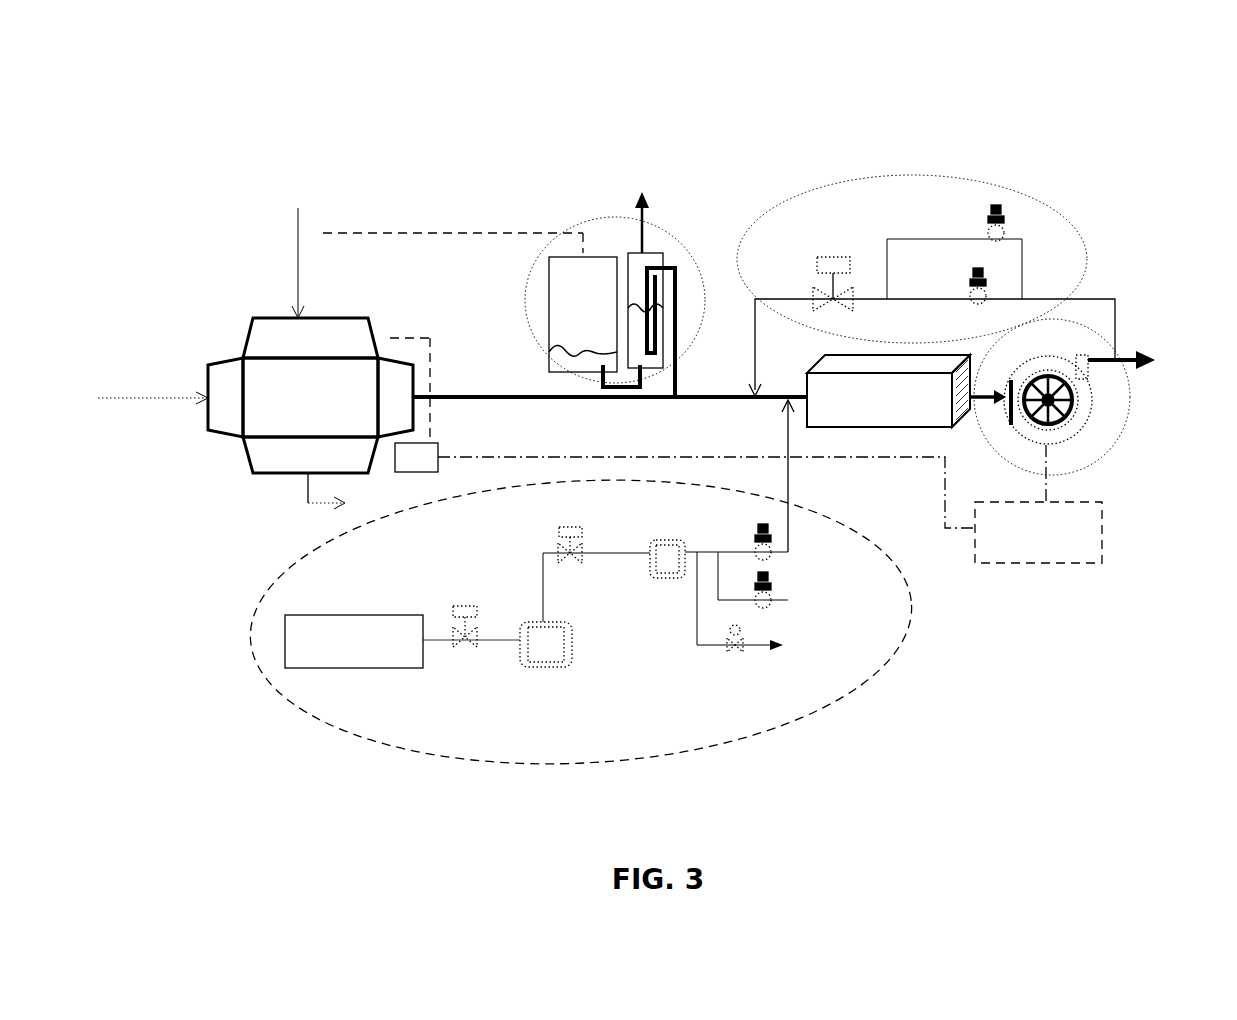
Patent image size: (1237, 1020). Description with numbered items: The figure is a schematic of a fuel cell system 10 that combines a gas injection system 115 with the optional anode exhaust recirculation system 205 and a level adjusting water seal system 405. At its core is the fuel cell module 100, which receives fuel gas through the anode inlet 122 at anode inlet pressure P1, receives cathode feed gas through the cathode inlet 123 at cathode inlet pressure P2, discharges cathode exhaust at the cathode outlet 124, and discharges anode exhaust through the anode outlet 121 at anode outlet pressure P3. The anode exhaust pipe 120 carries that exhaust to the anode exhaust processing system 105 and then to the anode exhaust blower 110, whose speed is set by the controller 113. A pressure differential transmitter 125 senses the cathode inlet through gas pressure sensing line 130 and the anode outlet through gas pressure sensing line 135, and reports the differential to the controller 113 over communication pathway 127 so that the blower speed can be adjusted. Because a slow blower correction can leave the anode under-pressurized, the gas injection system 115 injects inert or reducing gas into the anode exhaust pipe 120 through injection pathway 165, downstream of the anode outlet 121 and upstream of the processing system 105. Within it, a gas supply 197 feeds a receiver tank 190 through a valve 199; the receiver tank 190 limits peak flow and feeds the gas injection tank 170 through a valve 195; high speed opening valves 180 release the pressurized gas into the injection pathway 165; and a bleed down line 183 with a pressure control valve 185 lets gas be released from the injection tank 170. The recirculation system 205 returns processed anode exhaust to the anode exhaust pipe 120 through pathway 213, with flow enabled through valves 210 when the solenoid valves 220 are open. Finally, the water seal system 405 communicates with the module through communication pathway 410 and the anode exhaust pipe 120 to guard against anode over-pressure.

The fuel cell system 10 is at (1192, 135).
The fuel cell module 100 is at (183, 272).
The anode exhaust processing system 105 is at (890, 430).
The anode exhaust blower 110 is at (1063, 353).
The controller 113 is at (1102, 545).
The gas injection system 115 is at (395, 757).
The anode exhaust pipe 120 is at (724, 393).
The anode outlet 121 is at (377, 356).
The anode inlet 122 is at (203, 407).
The cathode inlet 123 is at (297, 233).
The cathode outlet 124 is at (308, 503).
The pressure differential transmitter 125 is at (440, 443).
The communication pathway 127 is at (948, 530).
The gas pressure sensing line 130 is at (415, 337).
The gas pressure sensing line 135 is at (407, 443).
The injection pathway 165 is at (790, 483).
The gas injection tank 170 is at (627, 570).
The high speed opening valves 180 is at (756, 605).
The bleed down line 183 is at (710, 650).
The pressure control valve 185 is at (748, 660).
The receiver tank 190 is at (522, 668).
The valve 195 is at (590, 558).
The gas supply 197 is at (283, 660).
The valve 199 is at (492, 650).
The anode exhaust recirculation system 205 is at (966, 168).
The valves 210 is at (990, 290).
The pathway 213 is at (757, 295).
The solenoid valves 220 is at (853, 289).
The water seal system 405 is at (628, 198).
The communication pathway 410 is at (585, 218).
The anode inlet pressure P1 is at (160, 390).
The cathode inlet pressure P2 is at (280, 268).
The anode outlet pressure P3 is at (382, 340).